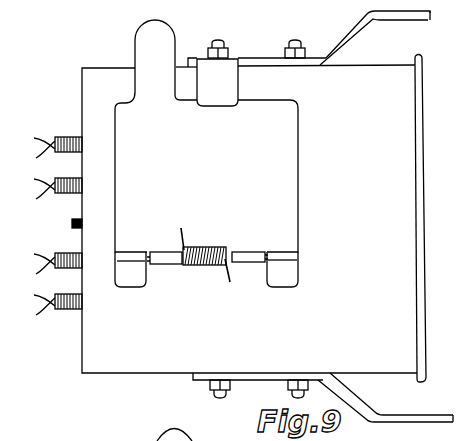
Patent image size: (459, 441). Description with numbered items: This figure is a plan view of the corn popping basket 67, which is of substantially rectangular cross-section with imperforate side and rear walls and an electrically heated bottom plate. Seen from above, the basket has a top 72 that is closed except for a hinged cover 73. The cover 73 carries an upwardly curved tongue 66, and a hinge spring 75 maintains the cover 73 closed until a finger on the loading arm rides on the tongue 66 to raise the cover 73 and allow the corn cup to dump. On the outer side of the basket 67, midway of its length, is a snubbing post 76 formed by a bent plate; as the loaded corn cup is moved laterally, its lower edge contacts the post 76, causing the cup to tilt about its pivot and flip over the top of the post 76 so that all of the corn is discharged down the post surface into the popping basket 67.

The tongue 66 is at (139, 41).
The popping basket 67 is at (132, 353).
The top 72 is at (388, 225).
The cover 73 is at (277, 165).
The hinge spring 75 is at (205, 248).
The snubbing post 76 is at (227, 85).